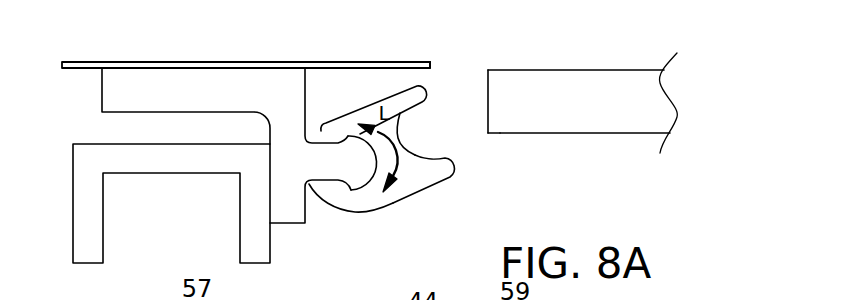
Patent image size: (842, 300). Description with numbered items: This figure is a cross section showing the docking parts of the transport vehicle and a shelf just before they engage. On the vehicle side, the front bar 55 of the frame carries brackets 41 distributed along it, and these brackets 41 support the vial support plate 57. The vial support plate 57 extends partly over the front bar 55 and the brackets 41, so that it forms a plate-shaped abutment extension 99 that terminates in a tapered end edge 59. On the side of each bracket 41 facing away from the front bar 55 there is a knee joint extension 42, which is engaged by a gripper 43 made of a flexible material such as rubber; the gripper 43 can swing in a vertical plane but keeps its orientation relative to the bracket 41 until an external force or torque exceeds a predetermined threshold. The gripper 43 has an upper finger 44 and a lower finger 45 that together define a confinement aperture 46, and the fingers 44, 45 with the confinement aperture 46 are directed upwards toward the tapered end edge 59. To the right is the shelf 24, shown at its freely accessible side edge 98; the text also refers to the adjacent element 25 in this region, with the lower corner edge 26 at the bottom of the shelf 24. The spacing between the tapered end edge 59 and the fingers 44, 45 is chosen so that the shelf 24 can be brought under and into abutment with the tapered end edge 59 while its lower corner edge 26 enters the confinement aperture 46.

The vial support plate 57 is at (115, 62).
The abutment extension 99 is at (350, 62).
The tapered end edge 59 is at (425, 62).
The bracket 41 is at (292, 162).
The front bar 55 is at (255, 232).
The knee joint extension 42 is at (357, 158).
The gripper 43 is at (395, 190).
The upper finger 44 is at (413, 93).
The confinement aperture 46 is at (399, 140).
The lower finger 45 is at (458, 163).
The side edge 98 is at (488, 92).
The strip 25 is at (572, 69).
The shelf 24 is at (603, 125).
The lower corner edge 26 is at (489, 134).